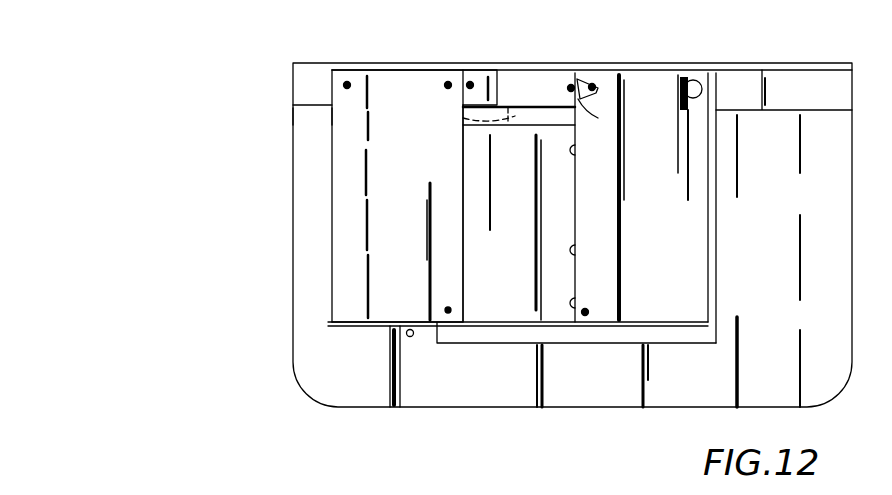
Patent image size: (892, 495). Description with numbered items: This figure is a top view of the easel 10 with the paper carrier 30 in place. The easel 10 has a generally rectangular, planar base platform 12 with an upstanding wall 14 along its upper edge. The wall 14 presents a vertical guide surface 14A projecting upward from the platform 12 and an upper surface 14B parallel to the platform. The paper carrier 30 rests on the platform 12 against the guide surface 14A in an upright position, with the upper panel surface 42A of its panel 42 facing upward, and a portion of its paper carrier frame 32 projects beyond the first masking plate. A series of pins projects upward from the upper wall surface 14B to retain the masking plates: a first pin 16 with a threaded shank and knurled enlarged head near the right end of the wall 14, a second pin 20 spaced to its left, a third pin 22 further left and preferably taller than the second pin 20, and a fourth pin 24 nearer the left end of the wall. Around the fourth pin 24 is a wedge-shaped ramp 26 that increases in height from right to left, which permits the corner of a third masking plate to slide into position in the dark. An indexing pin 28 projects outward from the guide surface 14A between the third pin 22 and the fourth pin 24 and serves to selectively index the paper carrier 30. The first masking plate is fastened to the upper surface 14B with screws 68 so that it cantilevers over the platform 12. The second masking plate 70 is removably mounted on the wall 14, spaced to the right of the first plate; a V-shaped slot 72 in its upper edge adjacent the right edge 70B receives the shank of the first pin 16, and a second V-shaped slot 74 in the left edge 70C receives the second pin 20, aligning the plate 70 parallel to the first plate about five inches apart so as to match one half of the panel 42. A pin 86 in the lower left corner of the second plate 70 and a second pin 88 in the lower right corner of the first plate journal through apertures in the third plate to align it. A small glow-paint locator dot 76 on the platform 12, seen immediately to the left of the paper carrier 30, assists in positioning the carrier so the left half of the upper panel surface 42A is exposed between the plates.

The easel 10 is at (707, 46).
The base platform 12 is at (332, 207).
The upstanding wall 14 is at (315, 72).
The vertical guide surface 14A is at (342, 105).
The upper surface of wall 14B is at (315, 90).
The first pin 16 is at (696, 79).
The second pin 20 is at (593, 85).
The third pin 22 is at (580, 78).
The fourth pin 24 is at (469, 82).
The wedge-shaped ramp 26 is at (490, 97).
The indexing pin 28 is at (460, 115).
The paper carrier 30 is at (647, 349).
The paper carrier frame 32 is at (564, 349).
The panel 42 is at (477, 238).
The upper panel surface 42A is at (511, 290).
The screws 68 is at (348, 83).
The second masking plate 70 is at (690, 300).
The right edge of second plate 70B is at (712, 217).
The left edge of second plate 70C is at (577, 262).
The V-shaped slot 72 is at (703, 72).
The second V-shaped slot 74 is at (586, 97).
The locator dot 76 is at (390, 332).
The pin 86 is at (585, 313).
The second pin 88 is at (449, 311).